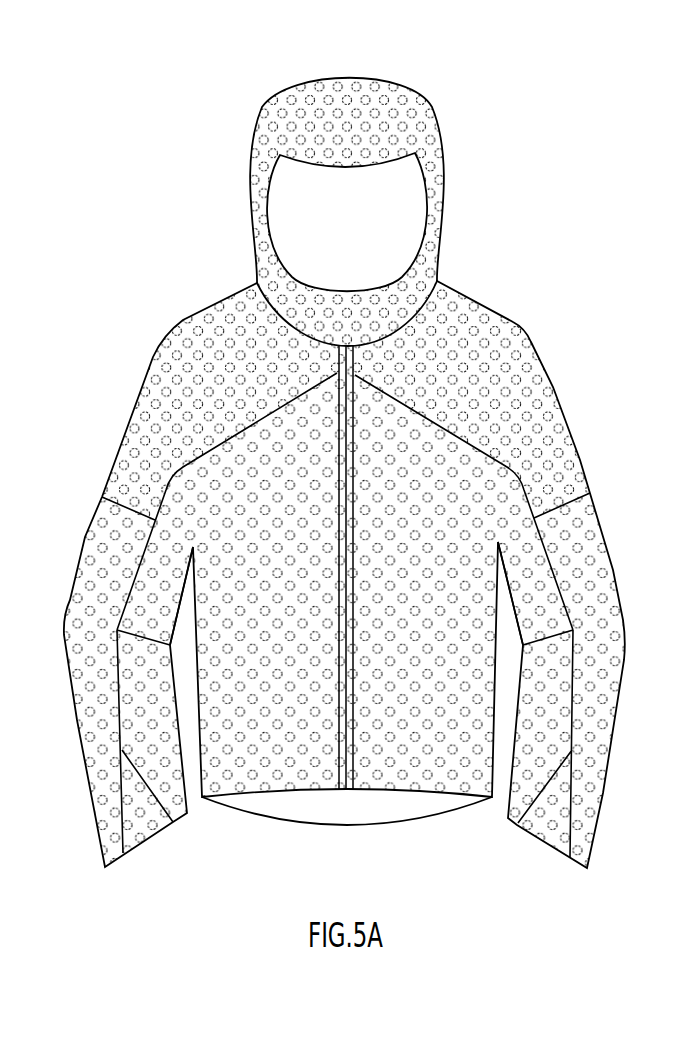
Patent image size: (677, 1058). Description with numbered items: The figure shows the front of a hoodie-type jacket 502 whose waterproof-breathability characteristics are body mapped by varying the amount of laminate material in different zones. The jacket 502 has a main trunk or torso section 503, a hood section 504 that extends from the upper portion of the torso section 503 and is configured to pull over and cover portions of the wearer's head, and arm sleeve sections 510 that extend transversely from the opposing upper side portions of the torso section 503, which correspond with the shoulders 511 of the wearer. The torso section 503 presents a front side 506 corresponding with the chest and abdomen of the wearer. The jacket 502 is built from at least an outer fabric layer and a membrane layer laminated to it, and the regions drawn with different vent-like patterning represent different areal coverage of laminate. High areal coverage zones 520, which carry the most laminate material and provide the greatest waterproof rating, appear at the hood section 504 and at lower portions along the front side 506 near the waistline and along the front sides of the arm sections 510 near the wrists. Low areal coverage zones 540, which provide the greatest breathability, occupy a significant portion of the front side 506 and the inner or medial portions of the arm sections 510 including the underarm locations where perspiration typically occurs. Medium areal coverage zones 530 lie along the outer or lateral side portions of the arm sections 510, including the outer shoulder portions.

The hoodie-type jacket 502 is at (205, 131).
The hood section 504 is at (412, 113).
The high areal coverage zones 520 is at (320, 112).
The front side 506 is at (380, 432).
The shoulders 511 is at (196, 352).
The arm sleeve sections 510 is at (147, 470).
The medium areal coverage zones 530 is at (537, 432).
The torso section 503 is at (338, 570).
The low areal coverage zones 540 is at (278, 752).